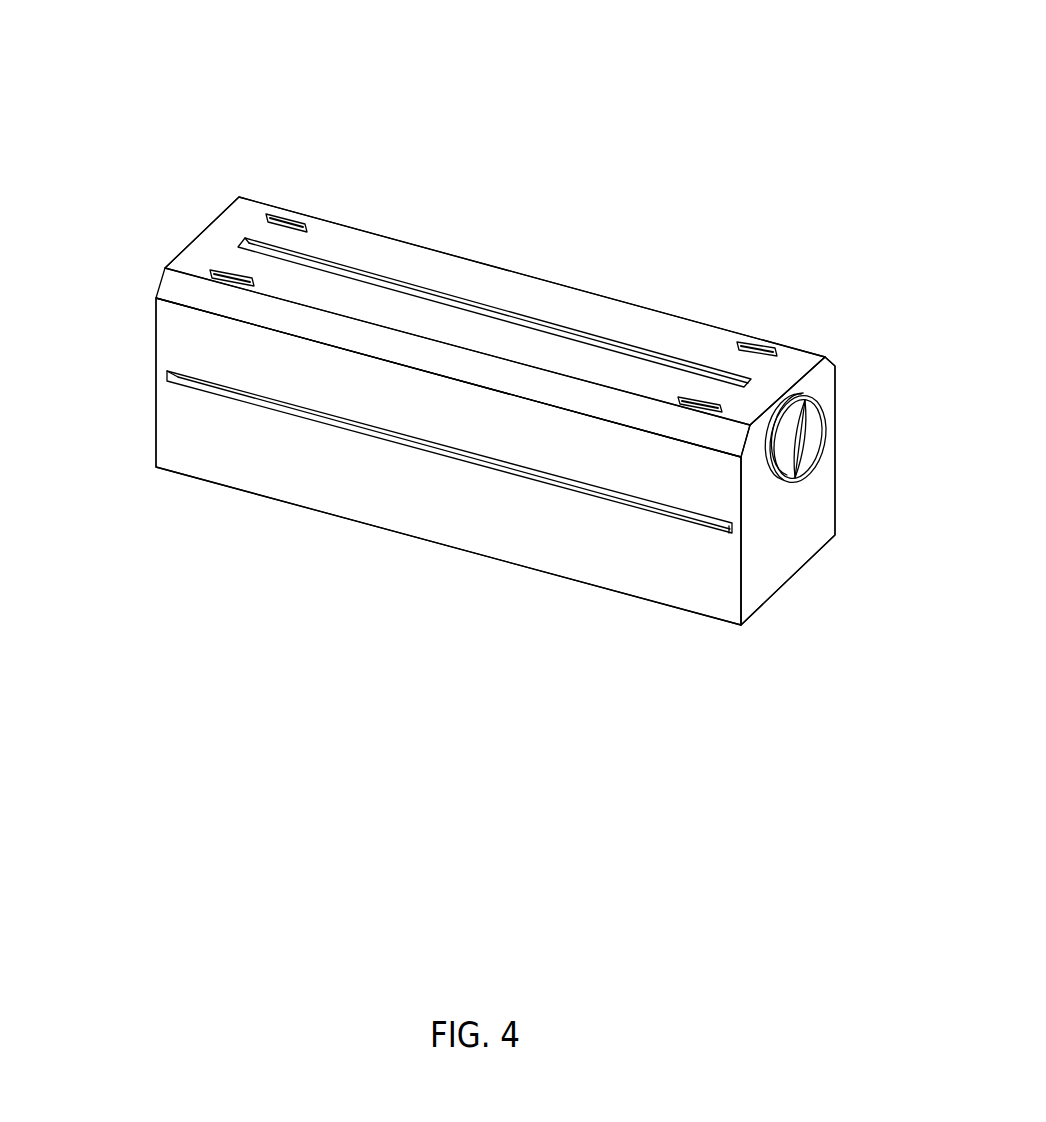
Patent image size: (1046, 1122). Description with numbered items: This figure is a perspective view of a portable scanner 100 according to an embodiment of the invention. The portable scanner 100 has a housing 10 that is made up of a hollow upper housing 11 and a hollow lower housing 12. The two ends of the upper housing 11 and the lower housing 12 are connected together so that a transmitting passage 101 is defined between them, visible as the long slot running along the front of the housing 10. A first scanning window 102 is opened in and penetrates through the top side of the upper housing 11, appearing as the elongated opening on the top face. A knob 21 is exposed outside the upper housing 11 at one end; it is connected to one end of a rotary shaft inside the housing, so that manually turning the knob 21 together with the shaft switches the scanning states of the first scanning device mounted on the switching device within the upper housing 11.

The portable scanner 100 is at (540, 44).
The housing 10 is at (560, 285).
The upper housing 11 is at (430, 268).
The lower housing 12 is at (437, 520).
The transmitting passage 101 is at (177, 378).
The first scanning window 102 is at (298, 260).
The knob 21 is at (812, 431).